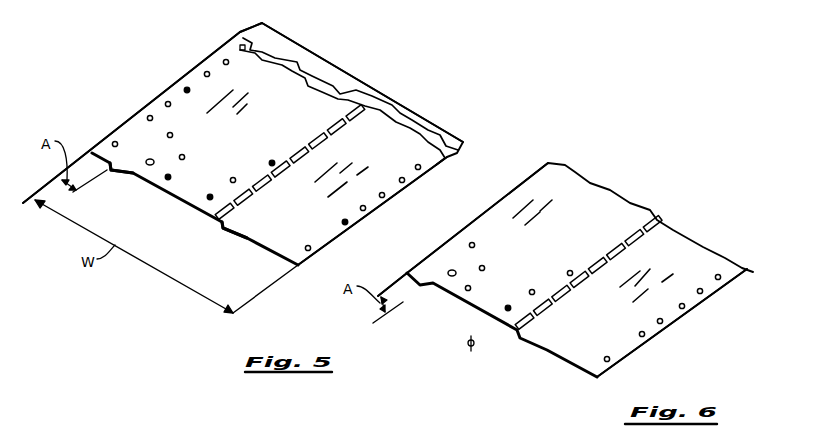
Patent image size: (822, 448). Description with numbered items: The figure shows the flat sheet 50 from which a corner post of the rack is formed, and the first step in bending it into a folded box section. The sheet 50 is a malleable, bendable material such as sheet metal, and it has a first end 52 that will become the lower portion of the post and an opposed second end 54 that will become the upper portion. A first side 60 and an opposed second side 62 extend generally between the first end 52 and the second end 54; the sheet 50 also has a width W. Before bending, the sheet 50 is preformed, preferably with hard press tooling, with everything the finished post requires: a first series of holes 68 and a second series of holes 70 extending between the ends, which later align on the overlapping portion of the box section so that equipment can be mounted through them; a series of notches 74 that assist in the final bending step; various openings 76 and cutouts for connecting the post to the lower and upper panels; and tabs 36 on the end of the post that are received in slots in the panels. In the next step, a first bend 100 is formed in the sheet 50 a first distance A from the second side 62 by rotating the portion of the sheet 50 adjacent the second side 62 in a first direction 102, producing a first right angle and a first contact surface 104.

In FIG. 5, the tabs 36 is at (293, 33).
In FIG. 5, the sheet 50 is at (323, 250).
In FIG. 6, the sheet 50 is at (642, 347).
In FIG. 5, the first end 52 is at (188, 207).
In FIG. 5, the second end 54 is at (437, 117).
In FIG. 5, the first side 60 is at (380, 208).
In FIG. 6, the first side 60 is at (707, 297).
In FIG. 5, the second side 62 is at (155, 100).
In FIG. 6, the second side 62 is at (414, 279).
In FIG. 5, the first series of holes 68 is at (208, 64).
In FIG. 5, the second series of holes 70 is at (406, 181).
In FIG. 5, the notches 74 is at (285, 173).
In FIG. 6, the notches 74 is at (588, 273).
In FIG. 5, the openings 76 is at (233, 178).
In FIG. 6, the first bend 100 is at (405, 297).
In FIG. 6, the first direction 102 is at (477, 344).
In FIG. 6, the first contact surface 104 is at (421, 289).